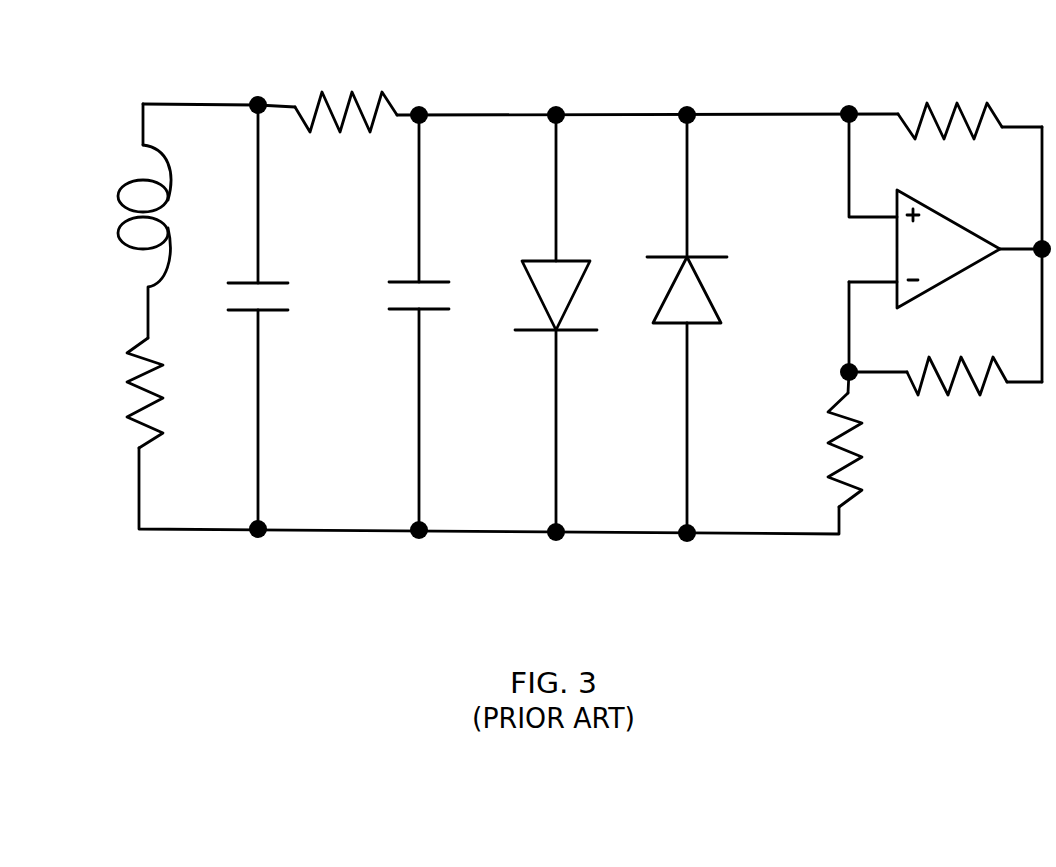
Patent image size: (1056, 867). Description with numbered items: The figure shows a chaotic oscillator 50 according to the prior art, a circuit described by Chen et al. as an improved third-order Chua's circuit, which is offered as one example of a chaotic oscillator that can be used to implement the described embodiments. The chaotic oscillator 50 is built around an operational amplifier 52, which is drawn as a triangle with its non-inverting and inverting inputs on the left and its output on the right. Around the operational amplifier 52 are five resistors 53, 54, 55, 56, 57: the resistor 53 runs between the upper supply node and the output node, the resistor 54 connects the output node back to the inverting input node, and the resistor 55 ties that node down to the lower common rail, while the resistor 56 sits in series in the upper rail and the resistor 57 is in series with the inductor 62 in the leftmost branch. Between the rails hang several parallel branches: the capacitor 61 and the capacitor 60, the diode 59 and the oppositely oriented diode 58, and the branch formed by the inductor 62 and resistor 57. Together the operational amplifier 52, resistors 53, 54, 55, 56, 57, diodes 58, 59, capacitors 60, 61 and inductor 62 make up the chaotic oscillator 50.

The chaotic oscillator 50 is at (770, 641).
The operational amplifier 52 is at (938, 212).
The resistor 53 is at (930, 102).
The resistor 54 is at (948, 397).
The resistor 55 is at (827, 447).
The resistor 56 is at (322, 92).
The resistor 57 is at (133, 390).
The diode 58 is at (702, 283).
The diode 59 is at (542, 303).
The capacitor 60 is at (392, 292).
The capacitor 61 is at (289, 300).
The inductor 62 is at (123, 208).